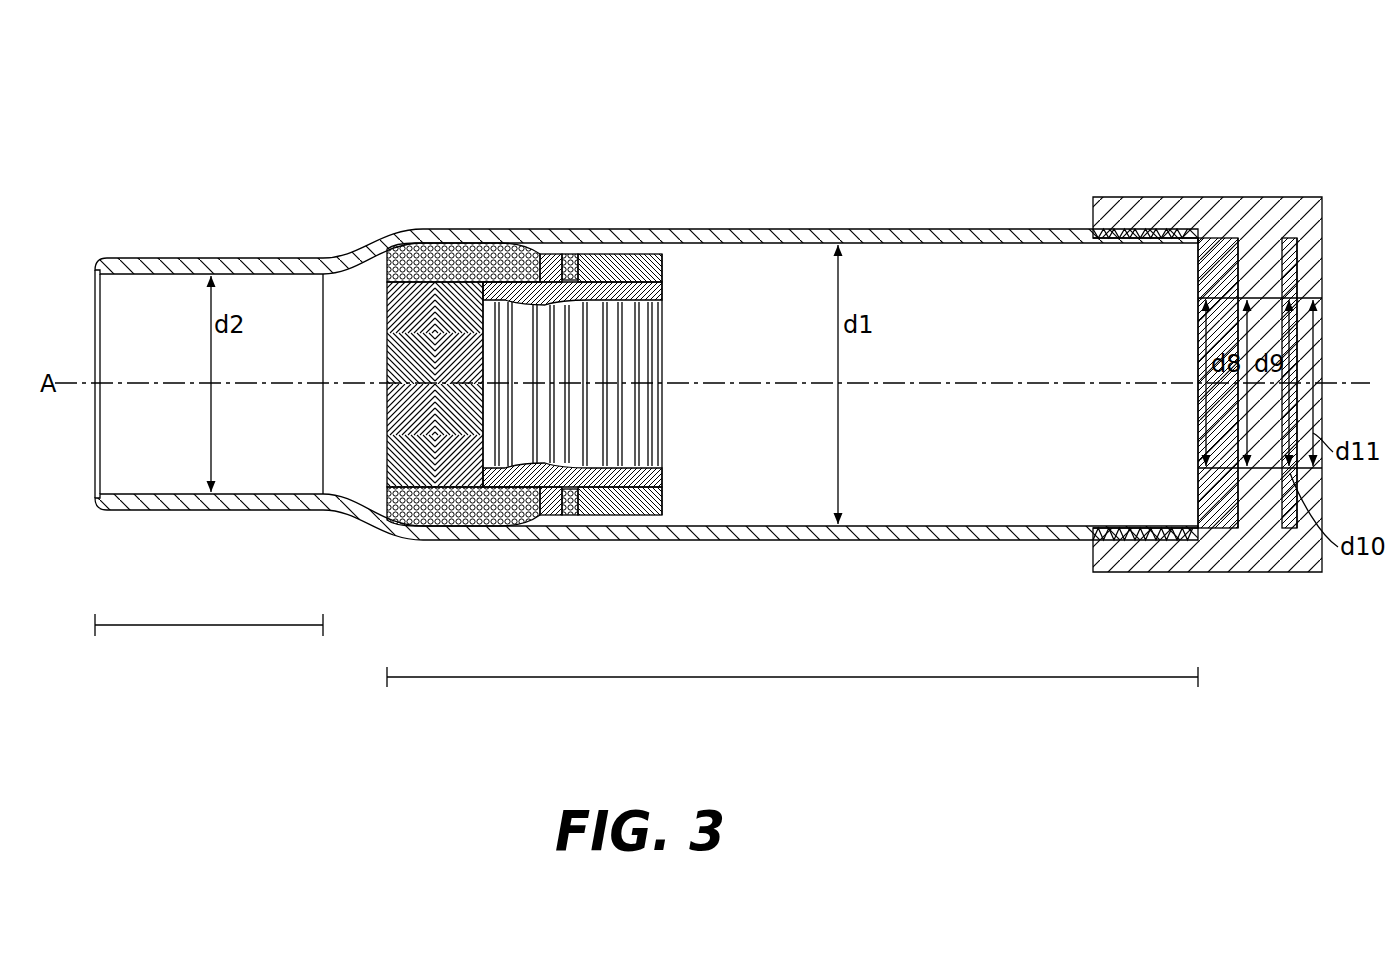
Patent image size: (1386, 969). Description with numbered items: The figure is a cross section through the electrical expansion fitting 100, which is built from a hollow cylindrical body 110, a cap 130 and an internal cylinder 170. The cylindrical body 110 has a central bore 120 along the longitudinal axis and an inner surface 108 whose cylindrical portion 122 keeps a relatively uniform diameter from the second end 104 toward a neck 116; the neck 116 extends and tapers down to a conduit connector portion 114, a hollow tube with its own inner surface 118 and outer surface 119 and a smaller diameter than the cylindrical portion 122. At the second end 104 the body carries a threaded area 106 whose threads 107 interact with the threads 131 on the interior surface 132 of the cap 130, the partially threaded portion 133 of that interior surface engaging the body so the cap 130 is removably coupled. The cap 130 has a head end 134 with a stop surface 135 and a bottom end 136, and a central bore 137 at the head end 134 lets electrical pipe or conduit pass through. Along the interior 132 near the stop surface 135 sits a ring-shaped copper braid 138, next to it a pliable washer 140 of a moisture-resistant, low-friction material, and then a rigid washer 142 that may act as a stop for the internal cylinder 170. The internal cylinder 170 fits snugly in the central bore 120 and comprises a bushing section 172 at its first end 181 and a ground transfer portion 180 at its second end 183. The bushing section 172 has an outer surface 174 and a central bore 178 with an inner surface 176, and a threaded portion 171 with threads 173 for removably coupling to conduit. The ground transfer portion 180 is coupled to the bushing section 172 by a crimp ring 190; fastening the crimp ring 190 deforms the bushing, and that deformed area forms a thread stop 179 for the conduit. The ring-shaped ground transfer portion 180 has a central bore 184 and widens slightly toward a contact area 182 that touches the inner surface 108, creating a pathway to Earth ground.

The electrical expansion fitting 100 is at (280, 144).
The second end 104 is at (1206, 515).
The threaded area 106 is at (1100, 232).
The threads 107 is at (1150, 527).
The inner surface 108 is at (735, 528).
The cylindrical body 110 is at (400, 224).
The conduit connector portion 114 is at (209, 639).
The neck 116 is at (362, 540).
The inner surface 118 is at (148, 490).
The outer surface 119 is at (225, 512).
The central bore 120 is at (76, 466).
The cylindrical portion 122 is at (792, 689).
The cap 130 is at (1304, 586).
The threads 131 is at (1212, 255).
The interior surface 132 is at (1258, 237).
The portion 133 is at (1138, 237).
The head end 134 is at (1322, 222).
The stop surface 135 is at (1322, 496).
The bottom end 136 is at (1093, 558).
The central bore 137 is at (1330, 372).
The copper braid 138 is at (1290, 480).
The pliable washer 140 is at (1248, 512).
The rigid washer 142 is at (1247, 240).
The internal cylinder 170 is at (530, 253).
The threaded portion 171 is at (655, 460).
The bushing section 172 is at (600, 255).
The threads 173 is at (635, 430).
The outer surface 174 is at (640, 255).
The inner surface 176 is at (655, 316).
The central bore 178 is at (640, 376).
The thread stop 179 is at (548, 488).
The ground transfer portion 180 is at (426, 255).
The first end 181 is at (662, 273).
The contact area 182 is at (432, 515).
The second end 183 is at (387, 290).
The central bore 184 is at (424, 352).
The crimp ring 190 is at (552, 255).